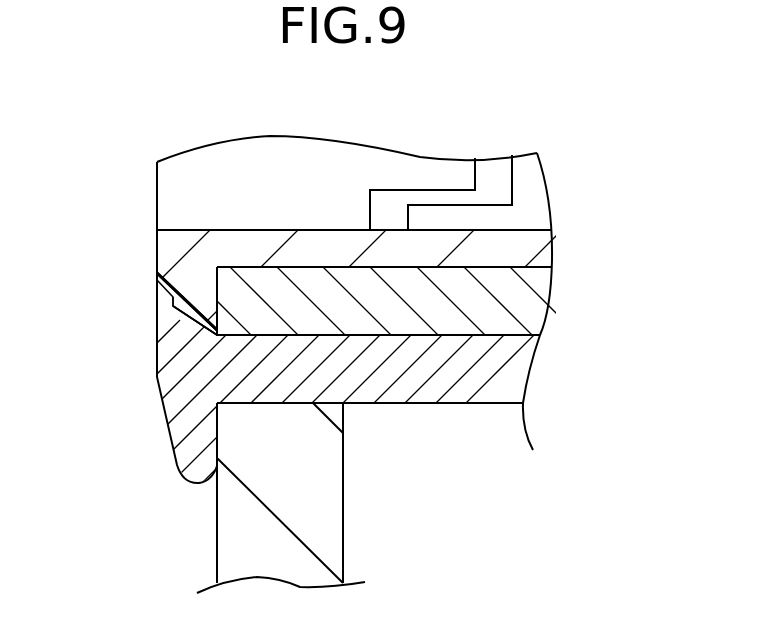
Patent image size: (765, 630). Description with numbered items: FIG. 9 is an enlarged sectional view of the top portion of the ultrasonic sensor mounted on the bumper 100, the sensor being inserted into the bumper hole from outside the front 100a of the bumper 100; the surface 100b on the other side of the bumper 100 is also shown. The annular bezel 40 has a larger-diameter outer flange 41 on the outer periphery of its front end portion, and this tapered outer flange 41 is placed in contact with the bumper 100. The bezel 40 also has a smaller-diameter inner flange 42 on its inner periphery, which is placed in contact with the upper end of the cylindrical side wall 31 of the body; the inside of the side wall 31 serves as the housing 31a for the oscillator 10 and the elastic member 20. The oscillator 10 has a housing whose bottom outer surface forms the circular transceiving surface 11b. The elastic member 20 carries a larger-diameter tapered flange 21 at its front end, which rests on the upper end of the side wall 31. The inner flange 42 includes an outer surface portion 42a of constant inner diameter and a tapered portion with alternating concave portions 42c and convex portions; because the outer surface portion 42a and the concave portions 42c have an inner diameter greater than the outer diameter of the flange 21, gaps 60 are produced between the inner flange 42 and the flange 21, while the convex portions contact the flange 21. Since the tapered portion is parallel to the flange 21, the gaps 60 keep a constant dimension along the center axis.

The oscillator 10 is at (324, 163).
The transceiving surface 11b is at (157, 175).
The elastic member 20 is at (240, 230).
The flange 21 is at (157, 240).
The side wall 31 is at (517, 302).
The housing 31a is at (498, 267).
The bezel 40 is at (478, 403).
The outer flange 41 is at (168, 422).
The inner flange 42 is at (157, 292).
The outer surface portion 42a is at (157, 277).
The concave portions 42c is at (198, 307).
The gaps 60 is at (187, 308).
The bumper 100 is at (313, 573).
The front of the bumper 100a is at (217, 528).
The inner side surface of housing 100b is at (343, 498).